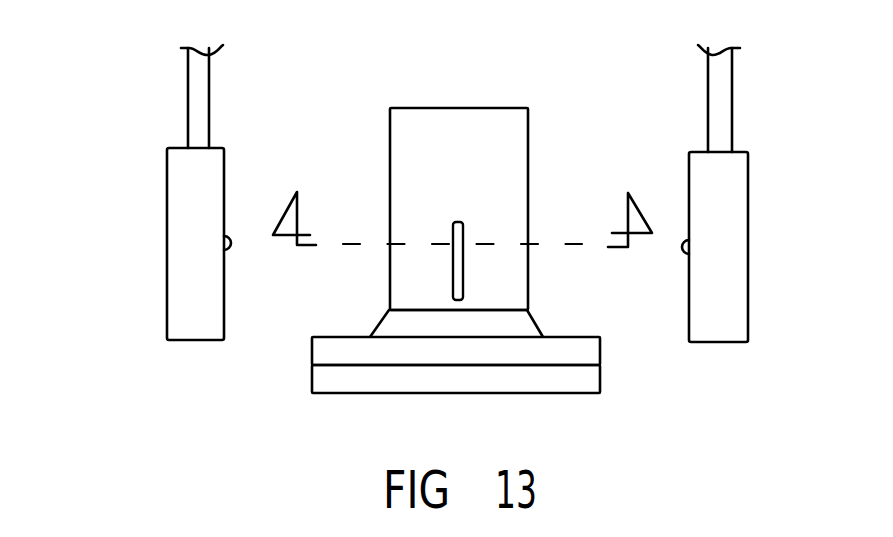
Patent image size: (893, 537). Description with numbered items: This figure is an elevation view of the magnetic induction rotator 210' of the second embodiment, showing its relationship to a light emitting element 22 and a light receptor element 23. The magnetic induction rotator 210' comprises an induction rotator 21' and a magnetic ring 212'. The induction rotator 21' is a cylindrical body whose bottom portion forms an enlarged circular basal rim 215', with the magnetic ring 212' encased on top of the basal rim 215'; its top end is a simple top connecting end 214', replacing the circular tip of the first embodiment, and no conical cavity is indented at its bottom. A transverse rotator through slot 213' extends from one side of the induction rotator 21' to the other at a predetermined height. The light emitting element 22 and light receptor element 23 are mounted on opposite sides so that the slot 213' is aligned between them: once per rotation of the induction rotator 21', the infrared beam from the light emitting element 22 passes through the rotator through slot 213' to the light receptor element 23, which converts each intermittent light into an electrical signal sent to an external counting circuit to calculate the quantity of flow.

The light emitting element 22 is at (190, 283).
The light receptor element 23 is at (730, 285).
The top connecting end 214' is at (459, 157).
The rotator through slot 213' is at (354, 272).
The induction rotator 21' is at (330, 362).
The magnetic ring 212' is at (480, 399).
The basal rim 215' is at (411, 409).
The magnetic induction rotator 210' is at (689, 364).